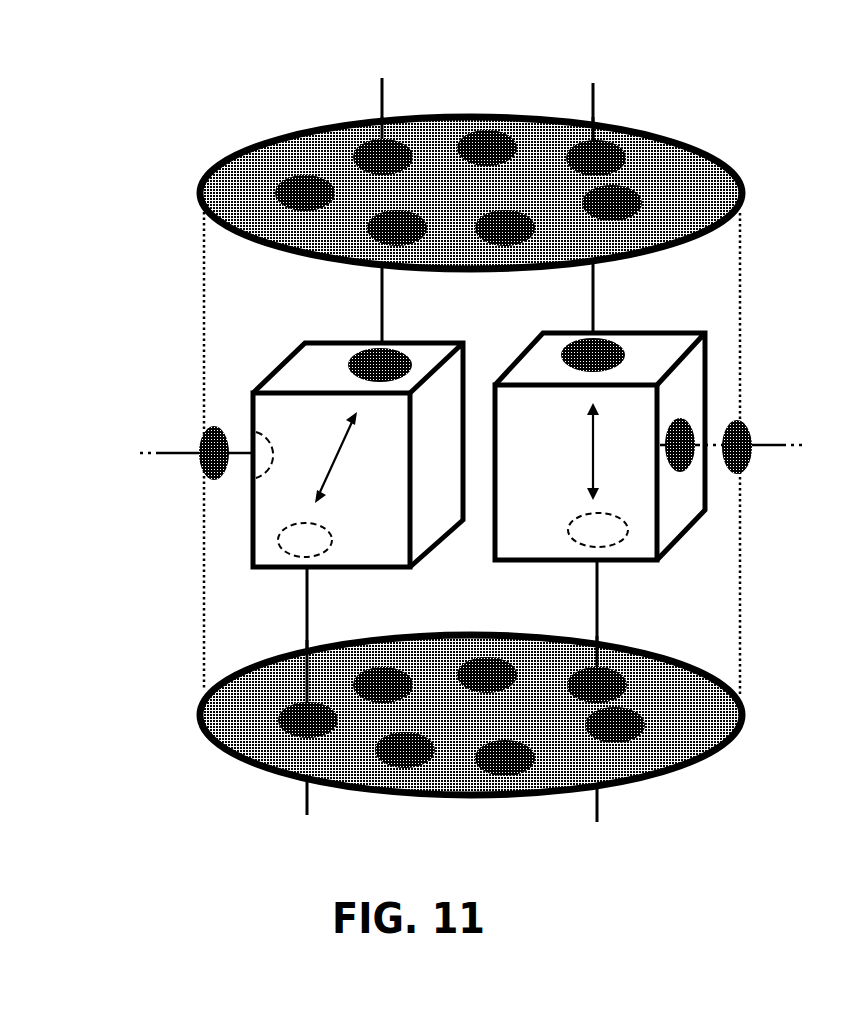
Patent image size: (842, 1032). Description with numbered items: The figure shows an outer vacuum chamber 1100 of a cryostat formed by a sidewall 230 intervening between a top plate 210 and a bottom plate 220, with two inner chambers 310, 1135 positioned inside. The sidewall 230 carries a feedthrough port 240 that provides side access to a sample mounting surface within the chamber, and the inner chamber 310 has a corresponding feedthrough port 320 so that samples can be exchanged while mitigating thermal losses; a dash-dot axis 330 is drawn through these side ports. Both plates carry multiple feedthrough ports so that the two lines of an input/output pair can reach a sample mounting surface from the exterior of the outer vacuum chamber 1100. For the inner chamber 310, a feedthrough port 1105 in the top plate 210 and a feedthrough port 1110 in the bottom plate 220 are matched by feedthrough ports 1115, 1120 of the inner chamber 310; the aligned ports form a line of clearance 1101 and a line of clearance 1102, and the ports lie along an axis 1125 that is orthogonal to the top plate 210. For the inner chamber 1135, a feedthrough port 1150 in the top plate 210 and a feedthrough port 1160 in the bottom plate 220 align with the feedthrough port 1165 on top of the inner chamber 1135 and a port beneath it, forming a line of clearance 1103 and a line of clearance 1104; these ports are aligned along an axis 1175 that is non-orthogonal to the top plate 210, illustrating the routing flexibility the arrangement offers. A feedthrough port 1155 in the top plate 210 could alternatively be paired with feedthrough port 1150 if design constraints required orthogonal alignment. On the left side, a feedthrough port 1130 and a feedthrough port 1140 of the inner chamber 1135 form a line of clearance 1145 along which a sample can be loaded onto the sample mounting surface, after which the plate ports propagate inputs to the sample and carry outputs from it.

The outer vacuum chamber 1100 is at (628, 54).
The line of clearance 1101 is at (594, 110).
The line of clearance 1102 is at (604, 572).
The line of clearance 1103 is at (382, 84).
The line of clearance 1104 is at (303, 592).
The feedthrough port 1105 is at (612, 156).
The feedthrough port 1110 is at (628, 690).
The feedthrough port 1115 is at (565, 348).
The feedthrough port 1120 is at (568, 535).
The axis 1125 is at (590, 455).
The feedthrough port 1130 is at (205, 440).
The inner chamber 1135 is at (305, 452).
The feedthrough port 1140 is at (270, 462).
The line of clearance 1145 is at (172, 466).
The feedthrough port 1150 is at (405, 150).
The feedthrough port 1155 is at (365, 700).
The feedthrough port 1160 is at (283, 718).
The feedthrough port 1165 is at (348, 368).
The axis 1175 is at (275, 540).
The top plate 210 is at (471, 160).
The bottom plate 220 is at (494, 753).
The sidewall 230 is at (204, 327).
The feedthrough port 240 is at (750, 440).
The inner chamber 310 is at (646, 456).
The feedthrough port 320 is at (683, 472).
The right axis 330 is at (803, 450).